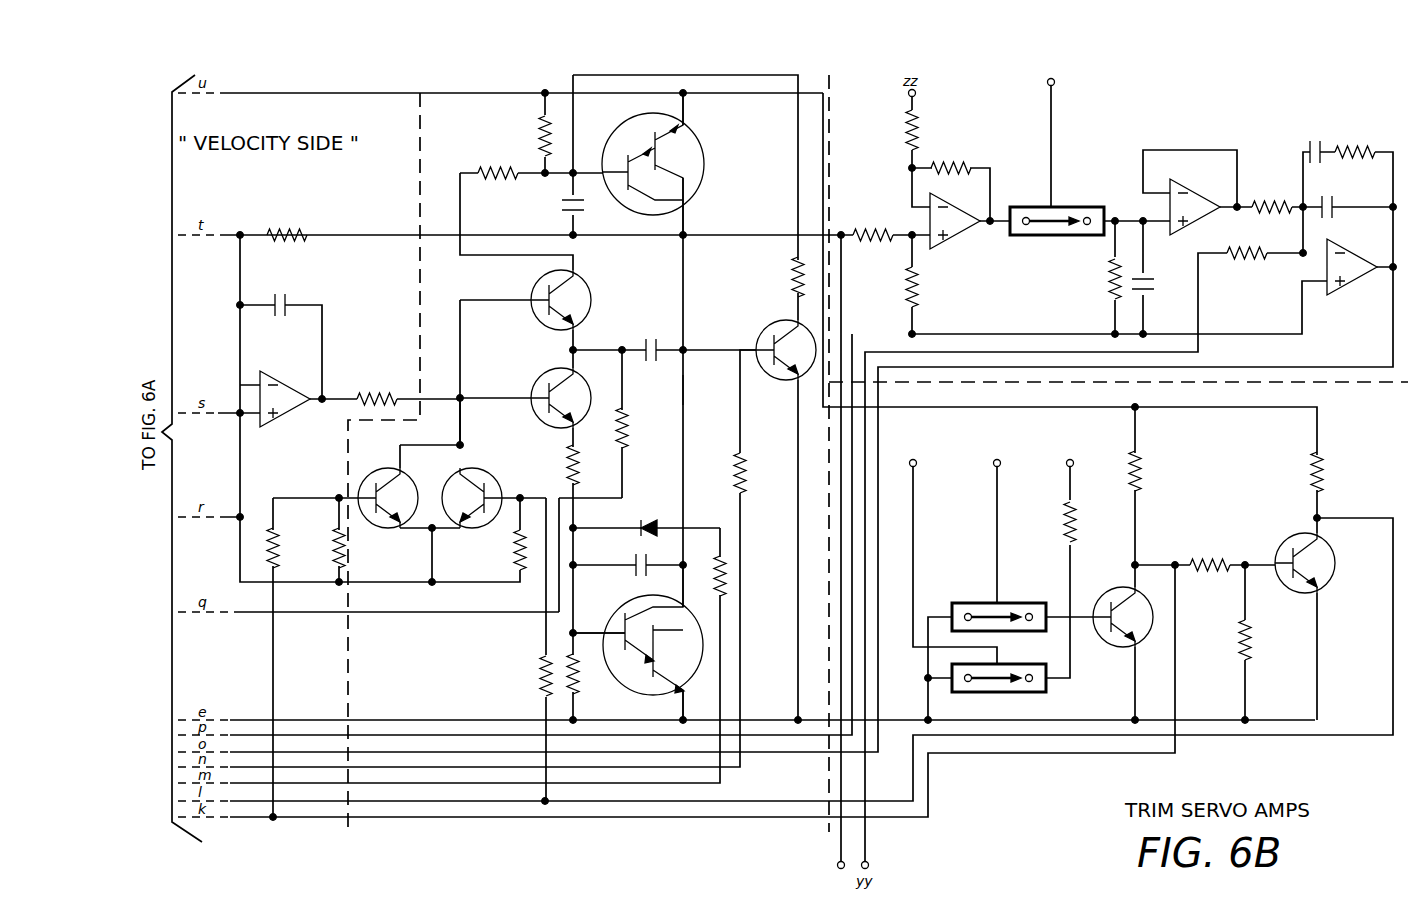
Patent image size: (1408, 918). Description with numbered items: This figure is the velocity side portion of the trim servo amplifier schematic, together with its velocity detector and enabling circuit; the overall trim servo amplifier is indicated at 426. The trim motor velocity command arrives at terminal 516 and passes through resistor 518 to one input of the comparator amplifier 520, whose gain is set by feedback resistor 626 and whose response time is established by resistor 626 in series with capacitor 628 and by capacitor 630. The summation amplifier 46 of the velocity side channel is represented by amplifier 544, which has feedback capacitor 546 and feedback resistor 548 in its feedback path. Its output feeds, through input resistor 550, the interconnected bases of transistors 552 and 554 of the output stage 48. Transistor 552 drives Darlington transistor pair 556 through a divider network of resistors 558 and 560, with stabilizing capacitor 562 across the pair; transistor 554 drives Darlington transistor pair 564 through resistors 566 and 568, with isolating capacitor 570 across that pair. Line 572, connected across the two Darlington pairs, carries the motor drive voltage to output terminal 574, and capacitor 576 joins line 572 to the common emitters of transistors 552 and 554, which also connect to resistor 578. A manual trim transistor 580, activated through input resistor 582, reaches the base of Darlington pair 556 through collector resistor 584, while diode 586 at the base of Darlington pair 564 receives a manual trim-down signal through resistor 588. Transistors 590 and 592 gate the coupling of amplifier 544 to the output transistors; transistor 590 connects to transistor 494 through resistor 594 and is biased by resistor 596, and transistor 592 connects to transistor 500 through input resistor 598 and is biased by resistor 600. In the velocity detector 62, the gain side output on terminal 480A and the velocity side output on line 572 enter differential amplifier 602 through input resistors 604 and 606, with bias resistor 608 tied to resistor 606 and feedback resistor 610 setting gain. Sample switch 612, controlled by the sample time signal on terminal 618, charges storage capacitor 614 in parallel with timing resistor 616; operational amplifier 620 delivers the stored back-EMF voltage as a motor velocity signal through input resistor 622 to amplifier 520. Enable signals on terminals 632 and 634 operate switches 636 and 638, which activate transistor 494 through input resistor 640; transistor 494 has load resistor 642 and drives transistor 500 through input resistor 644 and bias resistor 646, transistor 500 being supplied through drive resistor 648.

The feedback resistor 548 is at (270, 235).
The feedback capacitor 546 is at (300, 282).
The amplifier 544 is at (283, 385).
The input resistor 550 is at (385, 397).
The resistor 594 is at (268, 530).
The resistor 596 is at (336, 532).
The transistor 590 is at (393, 470).
The transistor 592 is at (468, 470).
The resistor 600 is at (512, 552).
The resistor 560 is at (538, 132).
The resistor 558 is at (492, 173).
The stabilizing capacitor 562 is at (560, 205).
The Darlington transistor pair 556 is at (612, 150).
The transistor 552 is at (531, 290).
The transistor 554 is at (535, 378).
The resistor 566 is at (567, 458).
The capacitor 576 is at (651, 340).
The resistor 578 is at (630, 440).
The diode 586 is at (641, 528).
The isolating capacitor 570 is at (637, 558).
The Darlington transistor pair 564 is at (628, 610).
The input resistor 598 is at (540, 676).
The resistor 568 is at (580, 685).
The line 572 is at (683, 398).
The input resistor 582 is at (728, 453).
The collector resistor 584 is at (790, 278).
The manual trim transistor 580 is at (765, 326).
The resistor 588 is at (725, 576).
The input resistor 604 is at (905, 130).
The input resistor 606 is at (878, 233).
The bias resistor 608 is at (916, 287).
The differential amplifier 602 is at (960, 240).
The feedback resistor 610 is at (953, 162).
The terminal 480A is at (918, 93).
The input terminal 618 is at (1056, 86).
The sample switch 612 is at (1072, 207).
The timing resistor 616 is at (1108, 280).
The storage capacitor 614 is at (1157, 284).
The operational amplifier 620 is at (1200, 200).
The input resistor 622 is at (1272, 205).
The capacitor 628 is at (1318, 140).
The feedback resistor 626 is at (1355, 145).
The capacitor 630 is at (1338, 207).
The comparator amplifier 520 is at (1355, 250).
The resistor 518 is at (1262, 258).
The summation amplifier 46 is at (382, 296).
The output stage 48 is at (639, 296).
The velocity detector 62 is at (1197, 132).
The terminal 632 is at (915, 460).
The terminal 634 is at (999, 460).
The load resistor 642 is at (1140, 475).
The drive resistor 648 is at (1320, 475).
The transistor 500 is at (1285, 535).
The input resistor 640 is at (1066, 522).
The input resistor 644 is at (1212, 560).
The switch 638 is at (970, 603).
The transistor 494 is at (1100, 595).
The bias resistor 646 is at (1245, 662).
The switch 636 is at (1035, 695).
The output terminal 574 is at (836, 865).
The terminal 516 is at (870, 865).
The trim servo amplifier circuit 426 is at (988, 782).